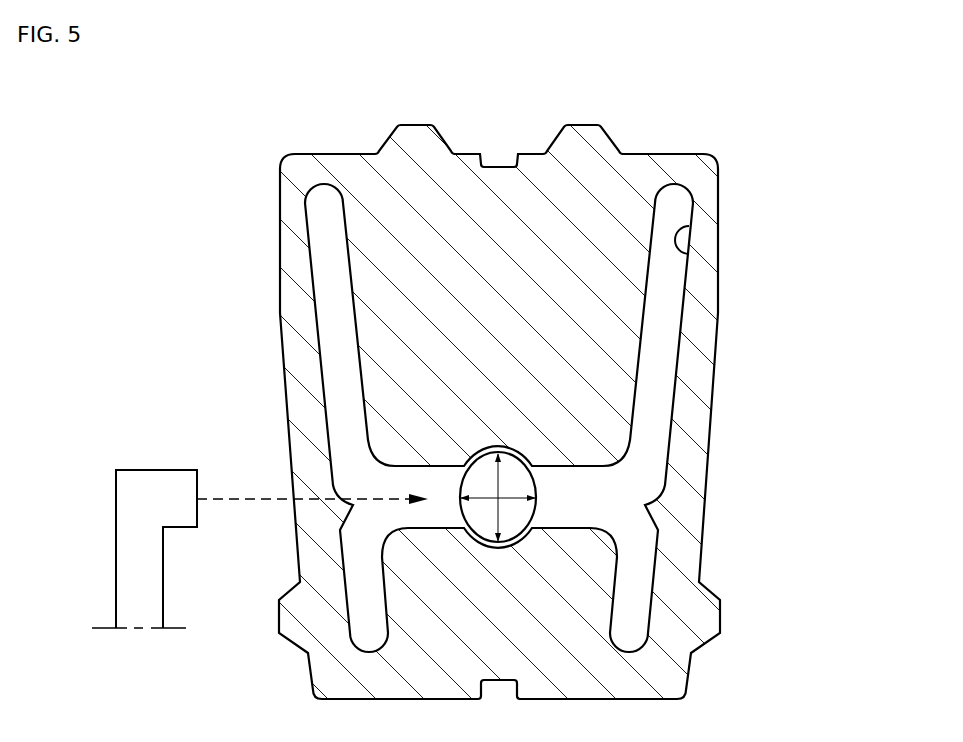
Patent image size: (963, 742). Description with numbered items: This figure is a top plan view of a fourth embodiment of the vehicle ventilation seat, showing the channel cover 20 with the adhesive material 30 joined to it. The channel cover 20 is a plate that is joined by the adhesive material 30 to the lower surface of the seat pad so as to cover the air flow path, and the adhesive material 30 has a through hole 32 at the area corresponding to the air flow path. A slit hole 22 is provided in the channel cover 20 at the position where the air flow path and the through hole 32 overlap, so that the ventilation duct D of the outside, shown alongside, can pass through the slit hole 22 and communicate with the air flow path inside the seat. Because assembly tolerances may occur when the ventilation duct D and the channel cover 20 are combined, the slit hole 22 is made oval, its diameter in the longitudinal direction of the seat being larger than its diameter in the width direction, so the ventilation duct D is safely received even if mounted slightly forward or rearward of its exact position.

The channel cover 20 is at (732, 312).
The slit hole 22 is at (541, 487).
The adhesive material 30 is at (498, 188).
The through hole 32 is at (689, 226).
The ventilation duct D is at (134, 510).